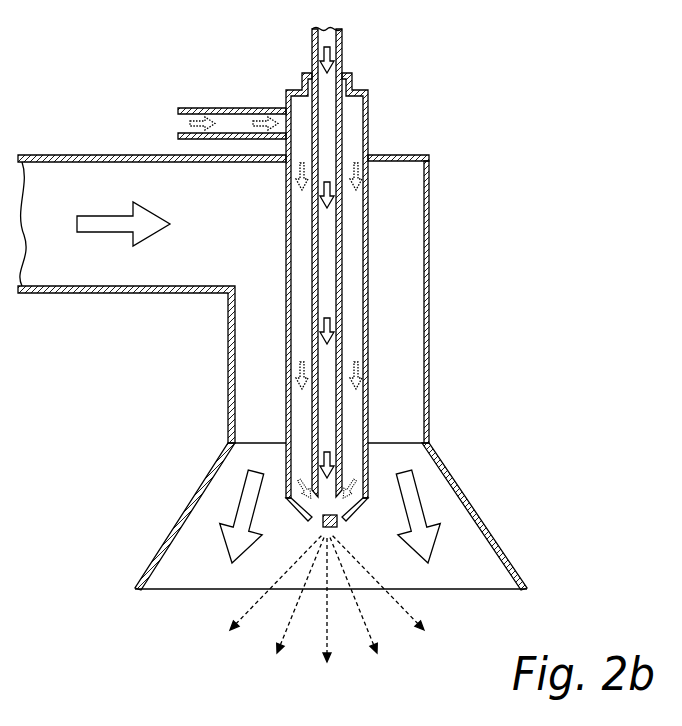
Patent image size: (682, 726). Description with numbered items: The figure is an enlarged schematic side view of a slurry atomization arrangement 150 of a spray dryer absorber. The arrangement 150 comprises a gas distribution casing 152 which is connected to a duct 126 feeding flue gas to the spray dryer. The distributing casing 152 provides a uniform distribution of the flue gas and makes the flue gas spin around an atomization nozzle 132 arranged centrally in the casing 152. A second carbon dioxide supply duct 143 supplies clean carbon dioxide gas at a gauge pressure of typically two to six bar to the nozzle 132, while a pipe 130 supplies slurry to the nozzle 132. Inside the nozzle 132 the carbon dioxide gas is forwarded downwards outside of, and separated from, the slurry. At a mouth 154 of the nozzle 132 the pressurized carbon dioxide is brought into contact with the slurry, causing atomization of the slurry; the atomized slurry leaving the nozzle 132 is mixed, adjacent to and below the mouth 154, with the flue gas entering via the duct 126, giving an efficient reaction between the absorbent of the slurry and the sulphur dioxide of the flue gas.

The duct 126 is at (77, 294).
The pipe 130 is at (342, 52).
The atomization nozzle 132 is at (367, 369).
The second carbon dioxide supply duct 143 is at (222, 108).
The slurry atomization arrangement 150 is at (414, 136).
The gas distribution casing 152 is at (432, 295).
The mouth 154 is at (308, 517).